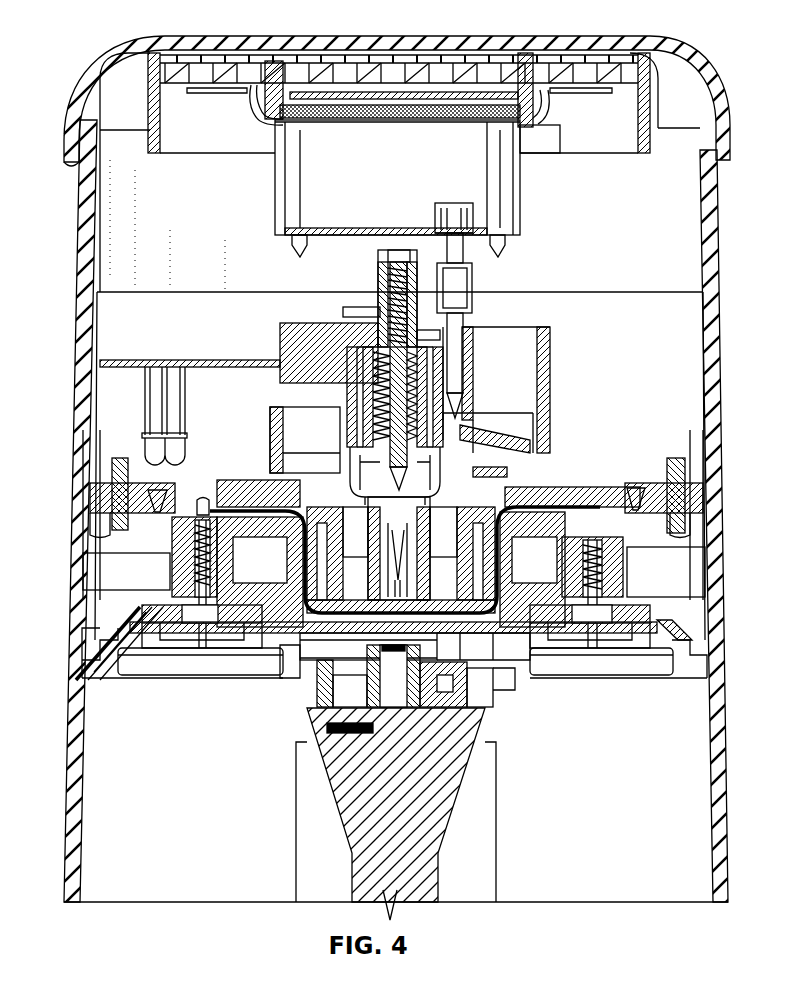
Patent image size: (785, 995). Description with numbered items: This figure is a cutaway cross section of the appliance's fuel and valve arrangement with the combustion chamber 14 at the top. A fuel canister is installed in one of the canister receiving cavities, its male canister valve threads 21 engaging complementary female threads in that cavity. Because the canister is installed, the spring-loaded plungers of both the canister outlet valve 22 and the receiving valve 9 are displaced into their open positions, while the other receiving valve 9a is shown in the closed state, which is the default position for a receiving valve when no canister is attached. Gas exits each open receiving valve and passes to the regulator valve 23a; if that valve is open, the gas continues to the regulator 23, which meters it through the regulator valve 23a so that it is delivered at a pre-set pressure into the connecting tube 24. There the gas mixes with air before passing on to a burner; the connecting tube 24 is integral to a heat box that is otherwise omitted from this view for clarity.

The receiving valve 9 is at (150, 492).
The receiving valve 9a is at (650, 490).
The combustion chamber 14 is at (272, 203).
The canister valve threads 21 is at (148, 585).
The canister outlet valve 22 is at (160, 595).
The regulator 23 is at (345, 455).
The regulator valve 23a is at (495, 668).
The connecting tube 24 is at (475, 285).